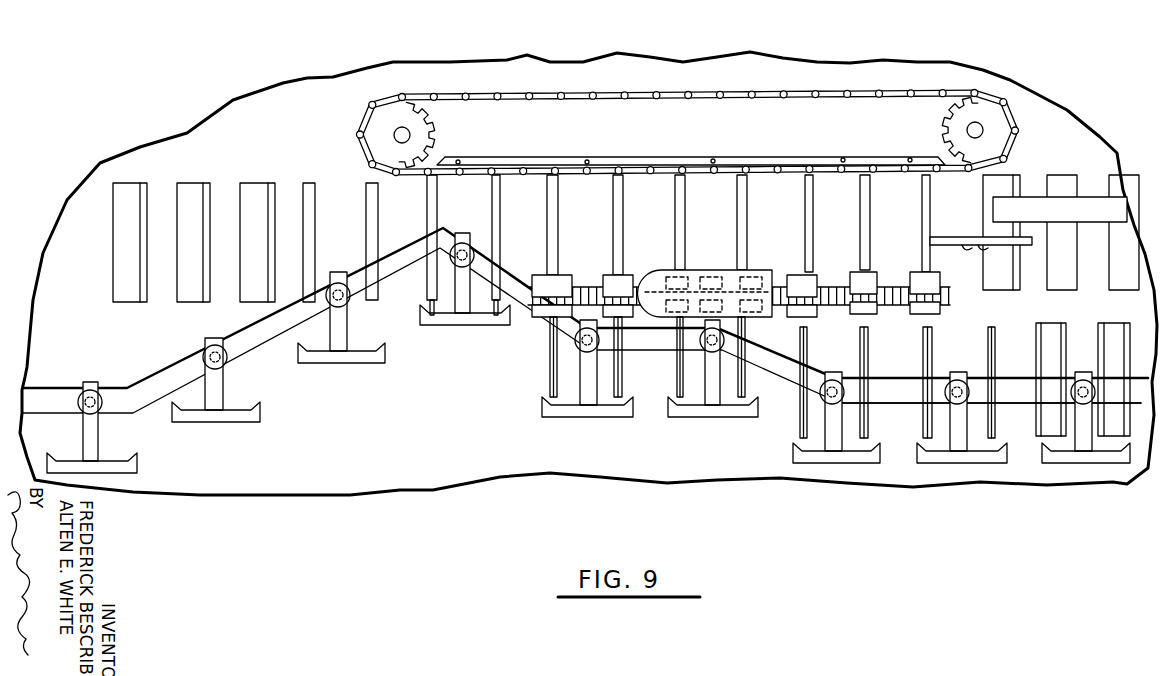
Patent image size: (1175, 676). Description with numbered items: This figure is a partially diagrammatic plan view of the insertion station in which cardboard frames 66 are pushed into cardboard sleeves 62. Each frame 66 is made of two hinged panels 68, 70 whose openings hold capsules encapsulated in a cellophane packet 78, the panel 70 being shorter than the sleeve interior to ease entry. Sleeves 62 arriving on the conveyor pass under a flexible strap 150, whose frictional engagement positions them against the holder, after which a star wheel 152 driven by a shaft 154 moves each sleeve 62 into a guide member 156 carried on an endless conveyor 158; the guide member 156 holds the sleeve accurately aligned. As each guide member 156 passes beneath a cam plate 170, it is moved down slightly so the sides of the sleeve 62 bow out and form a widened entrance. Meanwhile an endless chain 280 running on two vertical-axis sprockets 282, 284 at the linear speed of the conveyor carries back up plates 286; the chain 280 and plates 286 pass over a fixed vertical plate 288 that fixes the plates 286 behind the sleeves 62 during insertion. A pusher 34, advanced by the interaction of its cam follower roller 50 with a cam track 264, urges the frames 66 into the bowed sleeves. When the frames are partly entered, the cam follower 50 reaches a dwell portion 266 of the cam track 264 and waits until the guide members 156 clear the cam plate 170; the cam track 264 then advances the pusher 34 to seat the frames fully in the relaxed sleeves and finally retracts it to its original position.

The endless chain 280 is at (782, 93).
The sprocket 282 is at (445, 133).
The sprocket 284 is at (935, 128).
The back up plate 286 is at (593, 178).
The fixed vertical plate 288 is at (697, 158).
The flexible strap 150 is at (1092, 215).
The star wheel 152 is at (955, 237).
The shaft 154 is at (975, 252).
The guide member 156 is at (942, 308).
The endless conveyor 158 is at (897, 280).
The sleeve 62 is at (117, 222).
The cam plate 170 is at (766, 271).
The pusher 34 is at (210, 372).
The cam follower roller 50 is at (227, 358).
The frame 66 is at (548, 362).
The dwell portion 266 is at (653, 352).
The cam track 264 is at (893, 378).
The cellophane packet 78 is at (1050, 352).
The panel 68 is at (1041, 326).
The panel 70 is at (1068, 327).